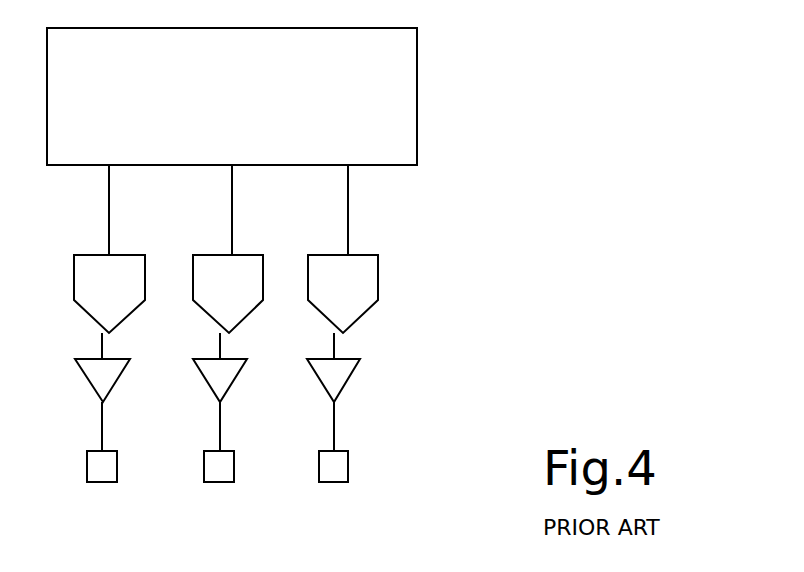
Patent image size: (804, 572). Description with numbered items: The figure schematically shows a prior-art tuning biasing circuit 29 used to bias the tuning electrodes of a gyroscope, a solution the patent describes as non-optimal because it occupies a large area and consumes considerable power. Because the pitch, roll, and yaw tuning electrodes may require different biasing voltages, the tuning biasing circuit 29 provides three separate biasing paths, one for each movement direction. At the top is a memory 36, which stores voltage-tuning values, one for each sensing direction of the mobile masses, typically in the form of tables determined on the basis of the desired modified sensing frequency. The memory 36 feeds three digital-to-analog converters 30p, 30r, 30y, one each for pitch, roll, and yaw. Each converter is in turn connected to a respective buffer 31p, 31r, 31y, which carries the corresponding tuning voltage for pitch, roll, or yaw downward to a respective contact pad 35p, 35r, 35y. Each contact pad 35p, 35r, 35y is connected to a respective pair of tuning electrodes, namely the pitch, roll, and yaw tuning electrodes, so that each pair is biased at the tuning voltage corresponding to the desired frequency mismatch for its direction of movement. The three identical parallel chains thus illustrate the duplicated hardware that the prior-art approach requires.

The memory 36 is at (407, 62).
The tuning biasing circuit 29 is at (444, 252).
The digital-to-analog converter 30p is at (80, 255).
The digital-to-analog converter 30r is at (212, 255).
The digital-to-analog converter 30y is at (328, 255).
The buffer 31p is at (88, 378).
The buffer 31r is at (200, 370).
The buffer 31y is at (320, 373).
The contact pad 35p is at (92, 478).
The contact pad 35r is at (220, 482).
The contact pad 35y is at (332, 482).